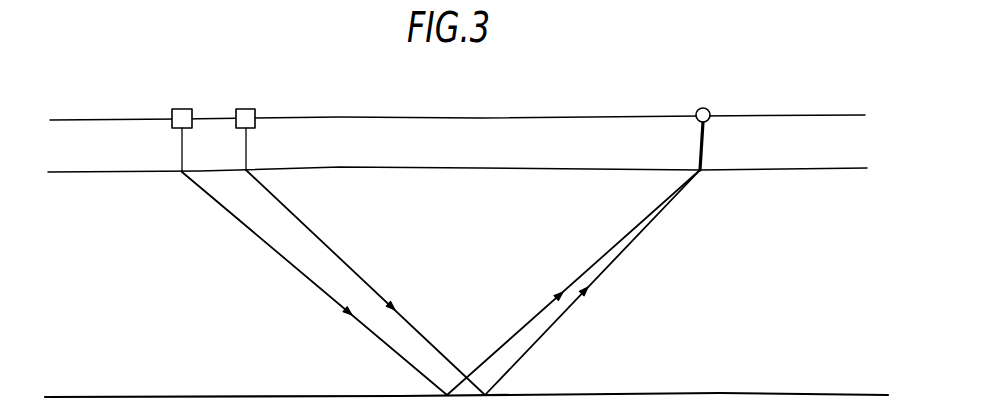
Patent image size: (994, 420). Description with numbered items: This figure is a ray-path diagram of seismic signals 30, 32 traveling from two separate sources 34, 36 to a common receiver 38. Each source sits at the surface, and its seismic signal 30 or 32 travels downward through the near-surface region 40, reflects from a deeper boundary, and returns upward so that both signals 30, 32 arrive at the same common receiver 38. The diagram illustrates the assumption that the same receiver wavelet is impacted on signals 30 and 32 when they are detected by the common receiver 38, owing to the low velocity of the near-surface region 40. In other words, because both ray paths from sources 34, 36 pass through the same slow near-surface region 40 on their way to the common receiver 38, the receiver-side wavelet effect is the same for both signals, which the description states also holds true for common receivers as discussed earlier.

The seismic signal 30 is at (305, 275).
The seismic signal 32 is at (345, 258).
The source 34 is at (168, 110).
The source 36 is at (259, 108).
The common receiver 38 is at (713, 108).
The near-surface region 40 is at (532, 130).